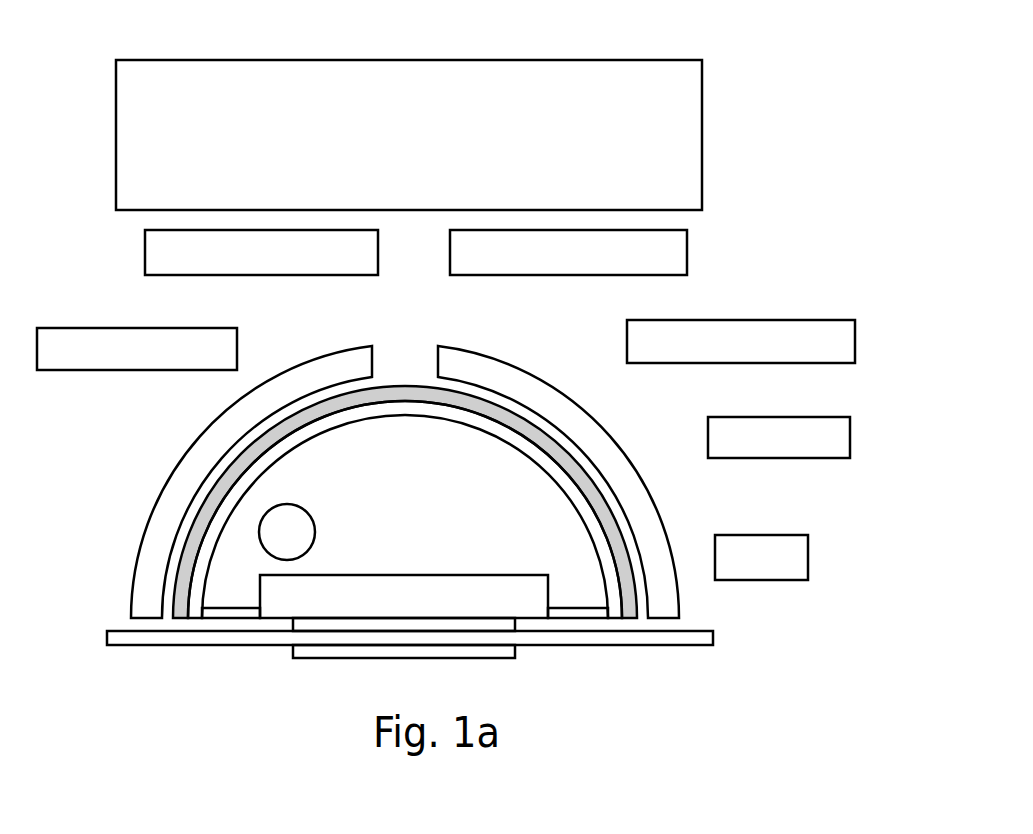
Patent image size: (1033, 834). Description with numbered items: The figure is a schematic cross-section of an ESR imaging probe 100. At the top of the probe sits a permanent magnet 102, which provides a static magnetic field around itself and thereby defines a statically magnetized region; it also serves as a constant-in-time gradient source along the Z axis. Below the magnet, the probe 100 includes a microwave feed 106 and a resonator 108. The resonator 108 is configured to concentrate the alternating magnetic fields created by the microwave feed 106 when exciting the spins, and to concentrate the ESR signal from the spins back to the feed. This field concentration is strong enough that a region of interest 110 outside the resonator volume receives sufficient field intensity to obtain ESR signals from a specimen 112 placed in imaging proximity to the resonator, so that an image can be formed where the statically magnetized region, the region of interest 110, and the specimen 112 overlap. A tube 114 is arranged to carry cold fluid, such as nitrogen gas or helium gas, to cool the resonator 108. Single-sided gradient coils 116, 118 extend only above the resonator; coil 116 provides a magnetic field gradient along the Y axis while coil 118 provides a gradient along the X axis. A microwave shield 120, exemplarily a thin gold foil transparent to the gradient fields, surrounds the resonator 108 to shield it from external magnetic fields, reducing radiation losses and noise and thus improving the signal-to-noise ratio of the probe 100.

The ESR imaging probe 100 is at (729, 83).
The permanent magnet 102 is at (409, 135).
The microwave feed 106 is at (282, 526).
The resonator 108 is at (529, 591).
The region of interest 110 is at (293, 658).
The specimen 112 is at (715, 633).
The tube 114 is at (507, 503).
The gradient coil 116 is at (333, 368).
The gradient coil 118 is at (493, 408).
The microwave shield 120 is at (617, 596).